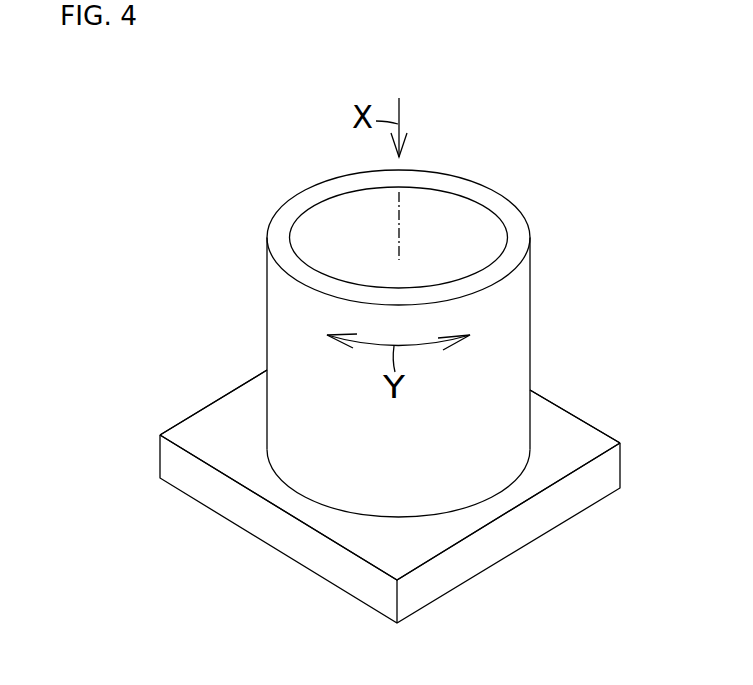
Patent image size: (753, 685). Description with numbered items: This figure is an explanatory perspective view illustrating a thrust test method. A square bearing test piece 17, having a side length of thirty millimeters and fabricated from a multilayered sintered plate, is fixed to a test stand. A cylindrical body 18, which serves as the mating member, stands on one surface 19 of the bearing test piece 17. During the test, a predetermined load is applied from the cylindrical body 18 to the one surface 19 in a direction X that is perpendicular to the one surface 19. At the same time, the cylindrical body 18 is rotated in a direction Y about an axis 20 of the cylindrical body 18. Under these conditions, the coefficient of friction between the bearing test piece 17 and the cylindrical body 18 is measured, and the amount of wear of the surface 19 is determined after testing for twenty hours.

The bearing test piece 17 is at (218, 428).
The cylindrical body 18 is at (500, 305).
The one surface 19 is at (570, 443).
The axis 20 is at (397, 227).